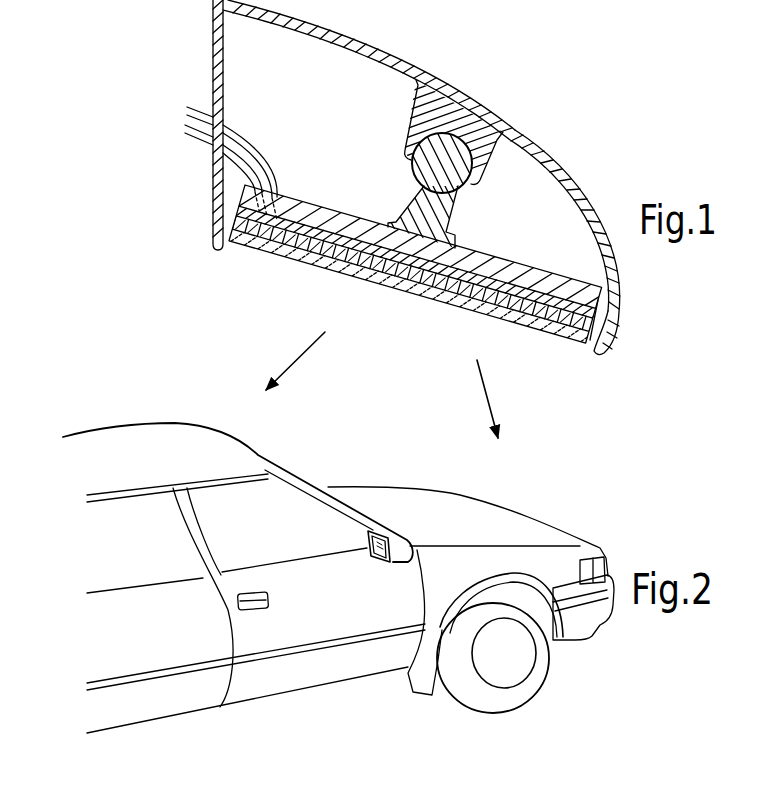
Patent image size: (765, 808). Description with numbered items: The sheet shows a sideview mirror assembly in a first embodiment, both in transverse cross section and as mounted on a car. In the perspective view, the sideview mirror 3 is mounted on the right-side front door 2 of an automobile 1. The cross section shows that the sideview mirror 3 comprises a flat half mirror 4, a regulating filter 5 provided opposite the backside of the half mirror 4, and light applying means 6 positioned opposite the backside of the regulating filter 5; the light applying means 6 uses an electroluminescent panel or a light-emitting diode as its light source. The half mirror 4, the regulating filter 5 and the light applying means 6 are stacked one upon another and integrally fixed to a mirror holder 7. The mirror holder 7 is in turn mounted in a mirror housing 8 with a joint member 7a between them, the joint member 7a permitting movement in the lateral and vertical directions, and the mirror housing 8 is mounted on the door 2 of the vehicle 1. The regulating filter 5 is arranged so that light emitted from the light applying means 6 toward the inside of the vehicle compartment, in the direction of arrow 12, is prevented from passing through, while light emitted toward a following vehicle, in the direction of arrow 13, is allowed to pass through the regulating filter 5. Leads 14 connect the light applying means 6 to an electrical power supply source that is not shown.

In FIG. 2, the automobile 1 is at (272, 440).
In FIG. 2, the right-side front door 2 is at (318, 655).
In FIG. 1, the sideview mirror 3 is at (540, 123).
In FIG. 2, the sideview mirror 3 is at (399, 553).
In FIG. 1, the flat half mirror 4 is at (363, 283).
In FIG. 1, the regulating filter 5 is at (591, 326).
In FIG. 1, the light applying means 6 is at (619, 320).
In FIG. 1, the mirror holder 7 is at (513, 262).
In FIG. 1, the joint member 7a is at (471, 176).
In FIG. 1, the mirror housing 8 is at (402, 66).
In FIG. 1, the arrow 12 is at (293, 363).
In FIG. 1, the arrow 13 is at (484, 388).
In FIG. 1, the leads 14 is at (197, 110).